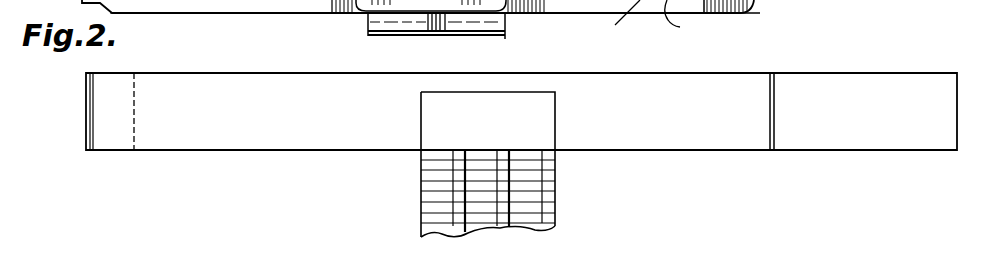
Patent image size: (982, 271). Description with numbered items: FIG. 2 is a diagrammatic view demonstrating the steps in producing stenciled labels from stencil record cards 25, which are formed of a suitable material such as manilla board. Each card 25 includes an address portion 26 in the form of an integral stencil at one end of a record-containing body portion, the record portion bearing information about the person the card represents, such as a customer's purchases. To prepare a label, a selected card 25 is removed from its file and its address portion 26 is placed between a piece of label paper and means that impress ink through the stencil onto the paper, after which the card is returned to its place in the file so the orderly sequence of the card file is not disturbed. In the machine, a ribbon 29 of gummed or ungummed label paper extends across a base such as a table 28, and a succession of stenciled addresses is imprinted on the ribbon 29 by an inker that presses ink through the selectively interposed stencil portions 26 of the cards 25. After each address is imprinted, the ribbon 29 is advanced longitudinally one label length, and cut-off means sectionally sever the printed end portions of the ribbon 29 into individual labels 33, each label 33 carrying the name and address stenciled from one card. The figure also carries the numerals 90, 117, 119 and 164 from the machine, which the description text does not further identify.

The stencil record card 25 is at (421, 186).
The address portion 26 is at (421, 118).
The table 28 is at (237, 13).
The ribbon 29 is at (256, 141).
The label 33 is at (870, 86).
The guide 90 is at (333, 13).
The lever 117 is at (682, 20).
The link 119 is at (625, 20).
The platen bar 164 is at (431, 34).